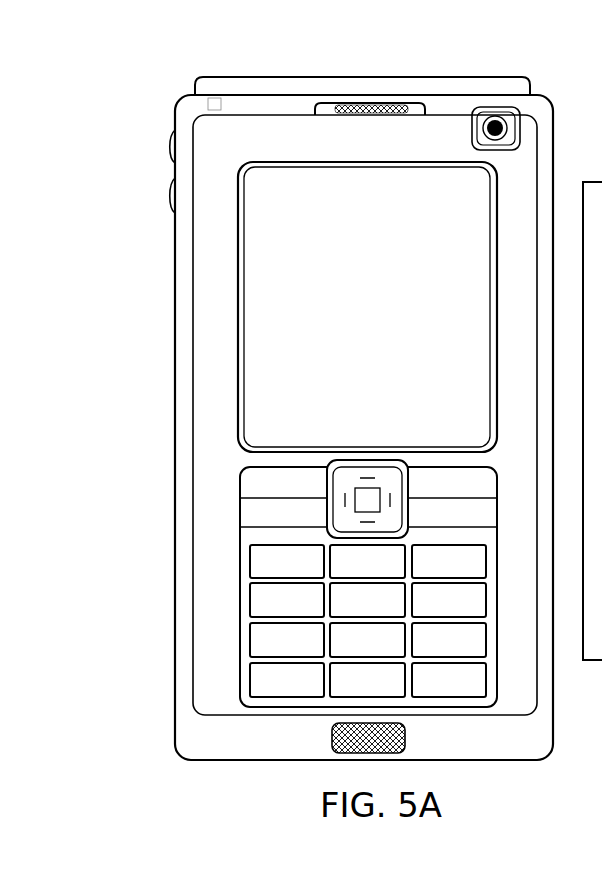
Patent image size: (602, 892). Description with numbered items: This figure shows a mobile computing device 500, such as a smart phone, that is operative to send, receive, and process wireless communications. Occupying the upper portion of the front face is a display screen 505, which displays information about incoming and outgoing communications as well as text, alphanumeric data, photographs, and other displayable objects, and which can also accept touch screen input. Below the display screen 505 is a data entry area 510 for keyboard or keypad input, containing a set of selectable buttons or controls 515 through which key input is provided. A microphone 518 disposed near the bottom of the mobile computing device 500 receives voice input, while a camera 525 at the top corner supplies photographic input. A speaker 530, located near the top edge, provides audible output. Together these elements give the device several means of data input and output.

The mobile computing device 500 is at (166, 100).
The display screen 505 is at (272, 290).
The data entry area 510 is at (242, 508).
The selectable buttons or controls 515 is at (260, 600).
The microphone 518 is at (330, 738).
The camera 525 is at (495, 128).
The speaker 530 is at (375, 108).